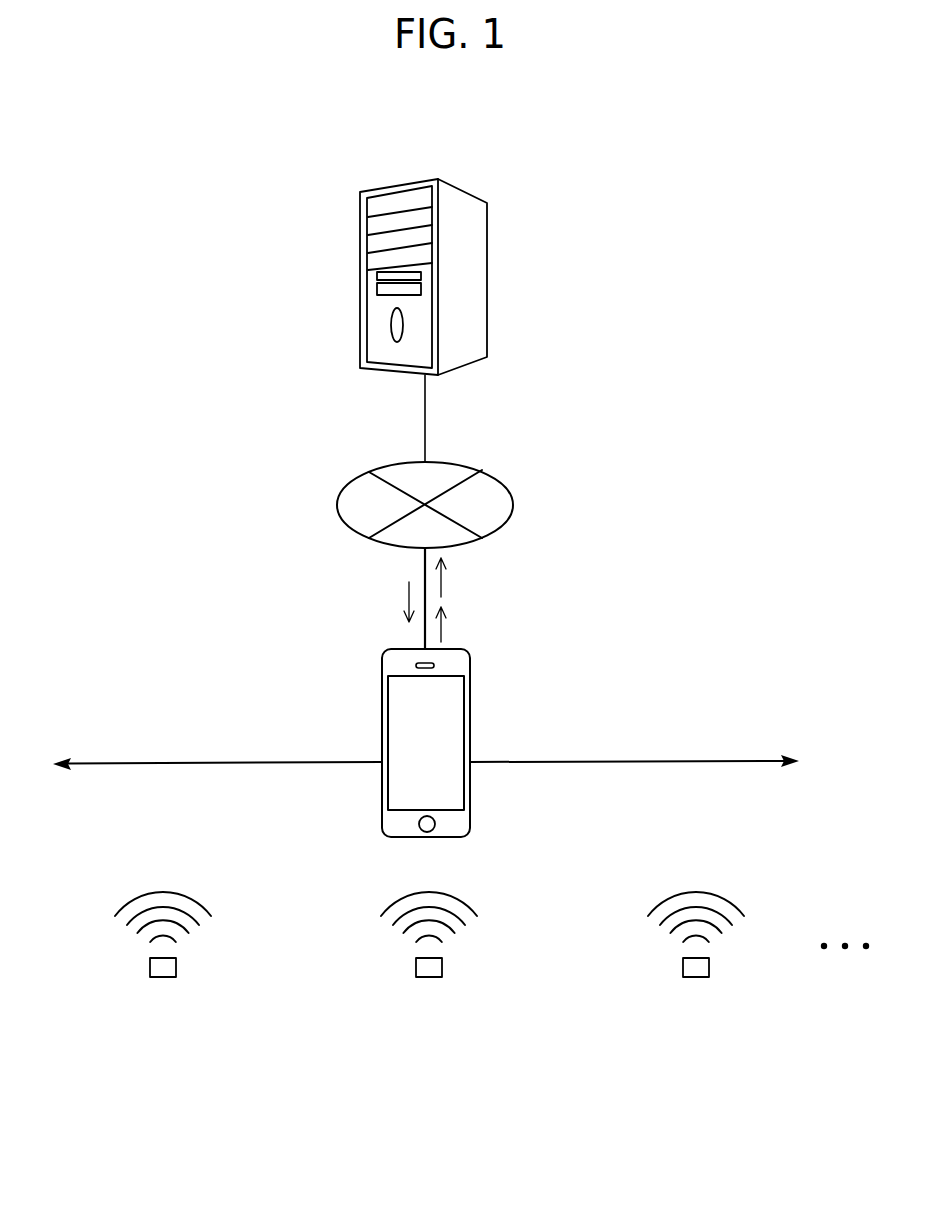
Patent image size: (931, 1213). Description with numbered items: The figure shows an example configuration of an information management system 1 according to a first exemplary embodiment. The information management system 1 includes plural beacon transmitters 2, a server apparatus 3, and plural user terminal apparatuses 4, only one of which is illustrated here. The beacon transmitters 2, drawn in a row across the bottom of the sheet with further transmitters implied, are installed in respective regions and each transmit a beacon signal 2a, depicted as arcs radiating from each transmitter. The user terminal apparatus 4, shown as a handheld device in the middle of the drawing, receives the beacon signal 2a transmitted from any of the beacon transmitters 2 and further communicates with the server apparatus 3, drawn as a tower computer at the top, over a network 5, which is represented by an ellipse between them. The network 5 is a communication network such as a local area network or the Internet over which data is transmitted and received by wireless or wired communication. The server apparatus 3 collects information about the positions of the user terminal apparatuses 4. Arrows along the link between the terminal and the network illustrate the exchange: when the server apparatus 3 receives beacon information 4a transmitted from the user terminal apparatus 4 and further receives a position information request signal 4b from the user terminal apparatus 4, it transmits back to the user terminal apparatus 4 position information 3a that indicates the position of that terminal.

The information management system 1 is at (569, 182).
The beacon transmitter 2 is at (163, 978).
The beacon signal 2a is at (165, 891).
The server apparatus 3 is at (457, 189).
The position information 3a is at (404, 599).
The user terminal apparatus 4 is at (472, 697).
The beacon information 4a is at (444, 583).
The position information request signal 4b is at (444, 632).
The network 5 is at (463, 463).